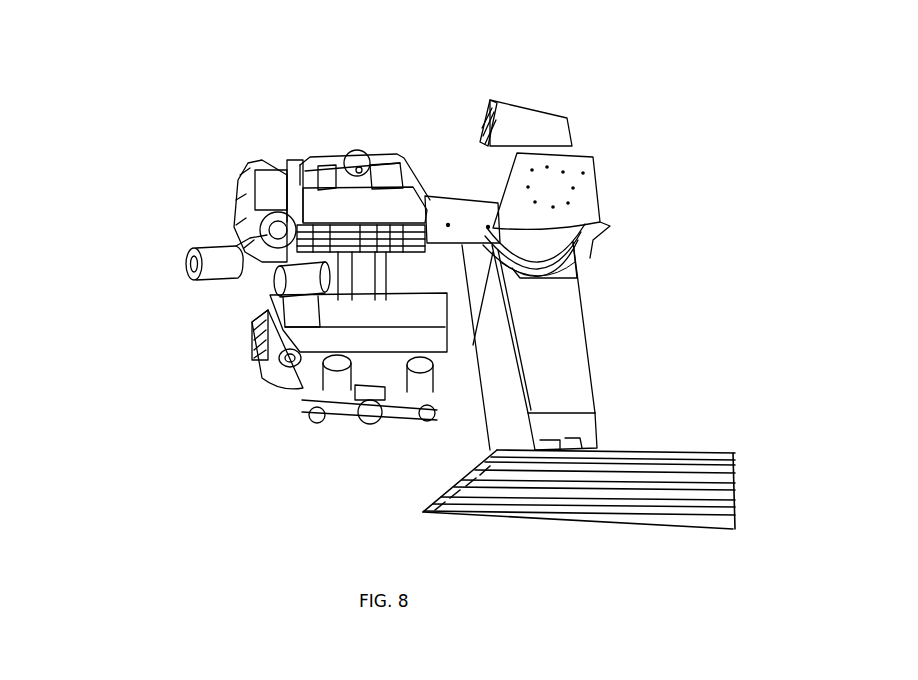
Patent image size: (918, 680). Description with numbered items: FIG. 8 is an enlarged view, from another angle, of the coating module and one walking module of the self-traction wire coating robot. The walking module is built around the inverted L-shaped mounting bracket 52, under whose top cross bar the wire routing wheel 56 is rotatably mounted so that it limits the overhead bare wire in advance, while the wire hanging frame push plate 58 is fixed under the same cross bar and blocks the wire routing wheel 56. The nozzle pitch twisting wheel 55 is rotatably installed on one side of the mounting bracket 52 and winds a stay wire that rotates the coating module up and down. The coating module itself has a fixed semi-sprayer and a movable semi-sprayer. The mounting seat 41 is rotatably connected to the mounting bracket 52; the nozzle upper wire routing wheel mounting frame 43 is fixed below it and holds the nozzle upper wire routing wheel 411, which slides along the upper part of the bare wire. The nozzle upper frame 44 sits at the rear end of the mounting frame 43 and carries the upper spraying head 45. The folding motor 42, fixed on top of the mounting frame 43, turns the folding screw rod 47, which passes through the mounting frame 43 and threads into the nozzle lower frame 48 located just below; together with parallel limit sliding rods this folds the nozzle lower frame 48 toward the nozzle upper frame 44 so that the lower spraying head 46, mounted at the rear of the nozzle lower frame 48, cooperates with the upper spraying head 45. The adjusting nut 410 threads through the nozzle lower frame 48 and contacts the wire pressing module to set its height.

The mounting seat 41 is at (325, 207).
The folding motor 42 is at (357, 150).
The nozzle upper wire routing wheel mounting frame 43 is at (293, 165).
The nozzle upper frame 44 is at (242, 177).
The upper spraying head 45 is at (243, 247).
The lower spraying head 46 is at (255, 345).
The folding screw rod 47 is at (300, 283).
The nozzle lower frame 48 is at (357, 313).
The adjusting nut 410 is at (387, 423).
The nozzle upper wire routing wheel 411 is at (232, 210).
The mounting bracket 52 is at (570, 347).
The nozzle pitch twisting wheel 55 is at (480, 141).
The wire routing wheel 56 is at (548, 248).
The wire hanging frame push plate 58 is at (585, 163).